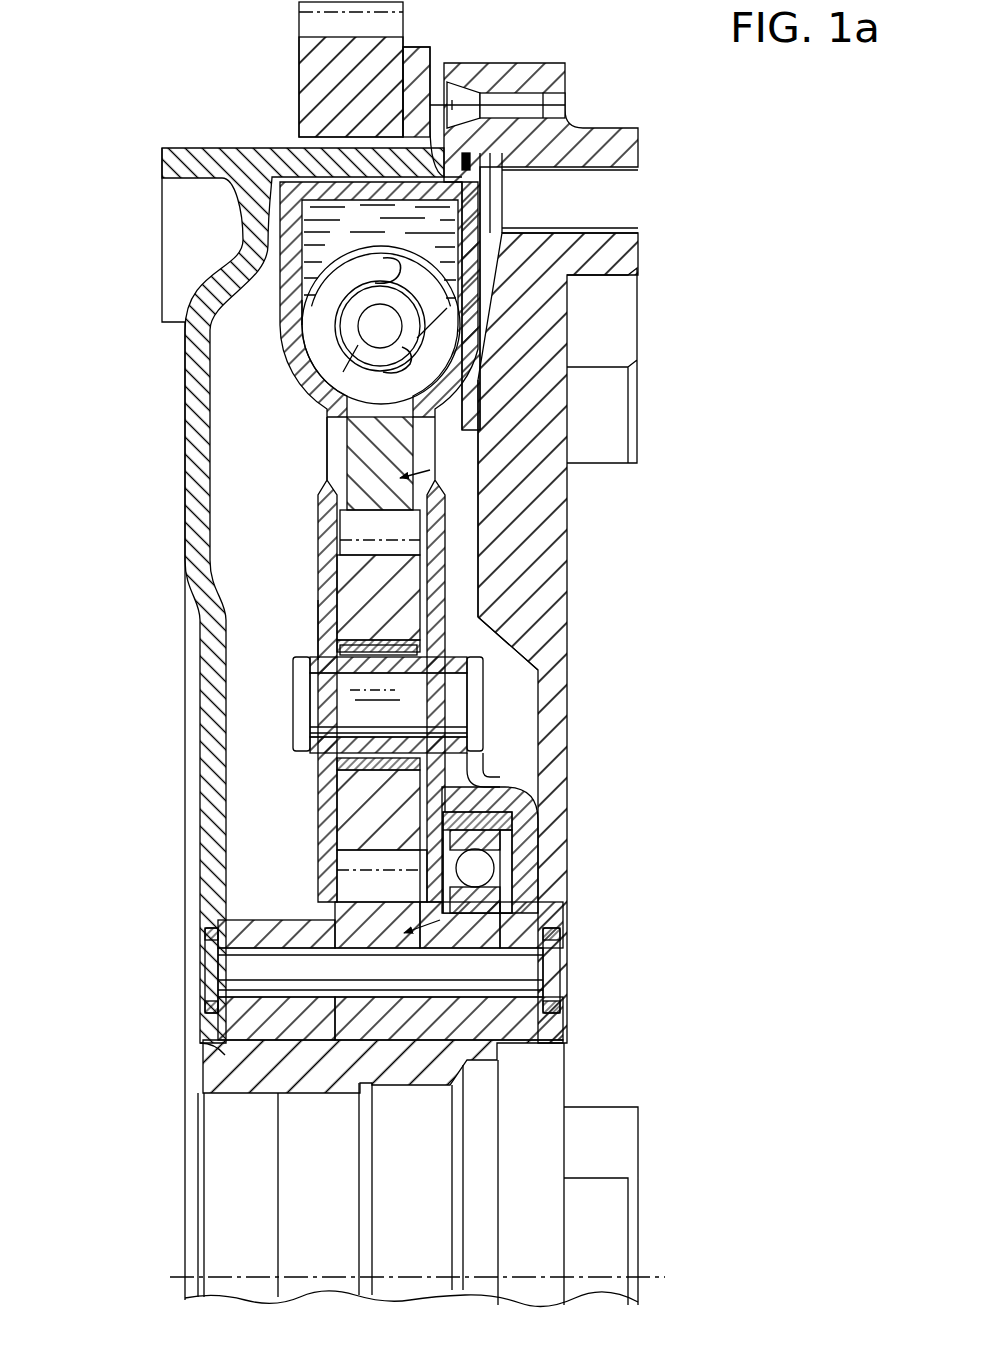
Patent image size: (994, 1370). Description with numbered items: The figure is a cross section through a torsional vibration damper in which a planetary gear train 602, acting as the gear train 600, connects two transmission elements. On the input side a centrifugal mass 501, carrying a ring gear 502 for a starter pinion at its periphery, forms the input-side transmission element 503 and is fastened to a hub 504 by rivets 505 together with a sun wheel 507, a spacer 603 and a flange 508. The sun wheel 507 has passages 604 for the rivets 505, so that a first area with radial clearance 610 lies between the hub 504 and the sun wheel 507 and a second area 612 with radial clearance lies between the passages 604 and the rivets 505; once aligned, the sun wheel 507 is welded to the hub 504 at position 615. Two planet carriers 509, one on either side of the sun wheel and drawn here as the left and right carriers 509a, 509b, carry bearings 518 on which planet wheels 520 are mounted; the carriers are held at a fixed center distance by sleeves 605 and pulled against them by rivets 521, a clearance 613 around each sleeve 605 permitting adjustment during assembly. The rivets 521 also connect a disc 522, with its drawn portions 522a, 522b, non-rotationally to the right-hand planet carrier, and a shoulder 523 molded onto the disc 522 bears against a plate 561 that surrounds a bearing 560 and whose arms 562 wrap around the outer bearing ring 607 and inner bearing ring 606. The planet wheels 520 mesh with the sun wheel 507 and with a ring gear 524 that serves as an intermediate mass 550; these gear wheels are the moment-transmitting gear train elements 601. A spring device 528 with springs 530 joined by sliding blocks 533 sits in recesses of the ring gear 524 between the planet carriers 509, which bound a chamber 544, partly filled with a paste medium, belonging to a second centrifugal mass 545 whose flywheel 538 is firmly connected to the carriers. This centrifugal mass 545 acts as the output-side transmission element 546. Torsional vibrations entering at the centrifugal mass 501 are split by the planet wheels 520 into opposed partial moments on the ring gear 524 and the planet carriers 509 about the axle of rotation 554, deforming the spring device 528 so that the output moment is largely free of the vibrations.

The centrifugal mass 501 is at (198, 400).
The ring gear 502 is at (325, 82).
The input-side transmission element 503 is at (180, 523).
The hub 504 is at (262, 1014).
The rivets 505 is at (530, 975).
The sun wheel 507 is at (216, 936).
The flange 508 is at (522, 918).
The planet carriers 509 is at (328, 566).
The upper cylinder section 509a is at (330, 456).
The lower cylinder section 509b is at (320, 664).
The bearings 518 is at (346, 652).
The planet wheel 520 is at (372, 820).
The rivets 521 is at (452, 690).
The disc 522 is at (472, 766).
The upper flange 522a is at (482, 452).
The chamfer 522b is at (443, 645).
The shoulder 523 is at (497, 796).
The ring gear 524 is at (362, 437).
The spring device 528 is at (330, 330).
The springs 530 is at (320, 350).
The sliding blocks 533 is at (310, 222).
The flywheel 538 is at (525, 536).
The chamber 544 is at (442, 420).
The second centrifugal mass 545 is at (540, 362).
The output-side transmission element 546 is at (642, 246).
The intermediate mass 550 is at (432, 471).
The axle of rotation 554 is at (646, 1278).
The bearing 560 is at (506, 846).
The plate 561 is at (507, 822).
The arms 562 is at (482, 866).
The gear train 600 is at (372, 605).
The gear train elements 601 is at (360, 480).
The planetary gear train 602 is at (442, 921).
The spacer 603 is at (492, 902).
The passages 604 is at (226, 1050).
The sleeves 605 is at (340, 671).
The inner bearing ring 606 is at (426, 892).
The outer bearing ring 607 is at (520, 832).
The clearance 610 is at (445, 1040).
The second area 612 is at (332, 955).
The clearance 613 is at (347, 775).
The position 615 is at (268, 1065).